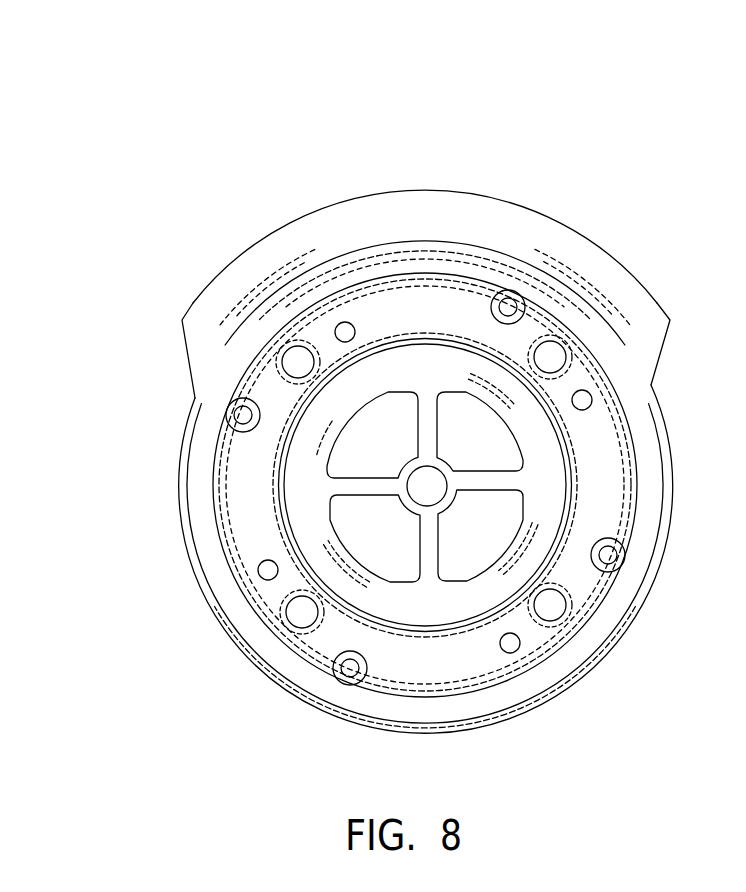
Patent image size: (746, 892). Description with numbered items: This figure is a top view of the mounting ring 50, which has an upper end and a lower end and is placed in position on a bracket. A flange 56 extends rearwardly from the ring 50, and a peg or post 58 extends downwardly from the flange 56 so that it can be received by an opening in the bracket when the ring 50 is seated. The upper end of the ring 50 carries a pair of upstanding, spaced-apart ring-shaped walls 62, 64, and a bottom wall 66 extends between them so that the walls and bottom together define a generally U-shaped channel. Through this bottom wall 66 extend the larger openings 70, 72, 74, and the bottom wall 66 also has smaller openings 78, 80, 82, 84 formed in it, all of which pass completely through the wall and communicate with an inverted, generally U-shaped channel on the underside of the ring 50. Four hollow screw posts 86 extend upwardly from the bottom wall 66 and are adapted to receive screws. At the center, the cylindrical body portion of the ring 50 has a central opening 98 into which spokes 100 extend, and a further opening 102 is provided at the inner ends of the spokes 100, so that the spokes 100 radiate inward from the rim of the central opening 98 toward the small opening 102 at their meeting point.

The mounting ring 50 is at (546, 192).
The flange 56 is at (593, 272).
The peg or post 58 is at (464, 340).
The ring-shaped wall 62 is at (670, 507).
The ring-shaped wall 64 is at (572, 461).
The bottom wall 66 is at (615, 505).
The larger opening 70 is at (566, 352).
The larger opening 72 is at (562, 610).
The larger opening 74 is at (300, 622).
The smaller opening 78 is at (290, 354).
The smaller opening 80 is at (517, 647).
The smaller opening 82 is at (262, 568).
The smaller opening 84 is at (343, 323).
The hollow screw post 86 is at (510, 306).
The central opening 98 is at (462, 545).
The spokes 100 is at (365, 485).
The opening 102 is at (425, 485).